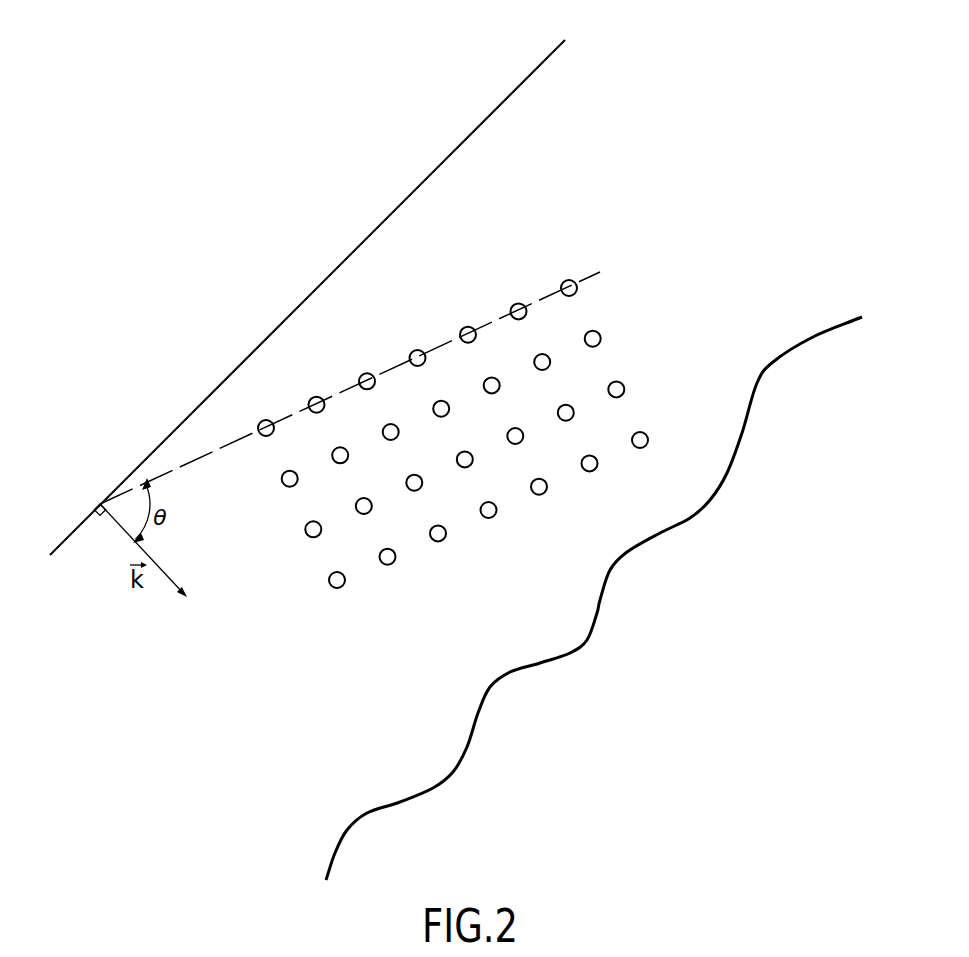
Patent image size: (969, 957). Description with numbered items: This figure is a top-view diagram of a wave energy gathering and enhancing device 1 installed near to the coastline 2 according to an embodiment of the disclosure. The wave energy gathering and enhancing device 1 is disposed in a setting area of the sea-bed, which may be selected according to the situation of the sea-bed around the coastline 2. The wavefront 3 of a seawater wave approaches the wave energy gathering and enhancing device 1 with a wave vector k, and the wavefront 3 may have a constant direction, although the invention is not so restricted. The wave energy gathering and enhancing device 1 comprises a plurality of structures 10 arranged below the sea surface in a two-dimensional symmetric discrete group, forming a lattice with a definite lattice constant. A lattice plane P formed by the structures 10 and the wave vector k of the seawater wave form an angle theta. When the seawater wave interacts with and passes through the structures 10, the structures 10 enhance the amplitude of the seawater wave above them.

The wave energy gathering and enhancing device 1 is at (486, 394).
The coastline 2 is at (743, 437).
The wavefront 3 is at (497, 107).
The structures 10 is at (563, 281).
The lattice plane P is at (596, 272).